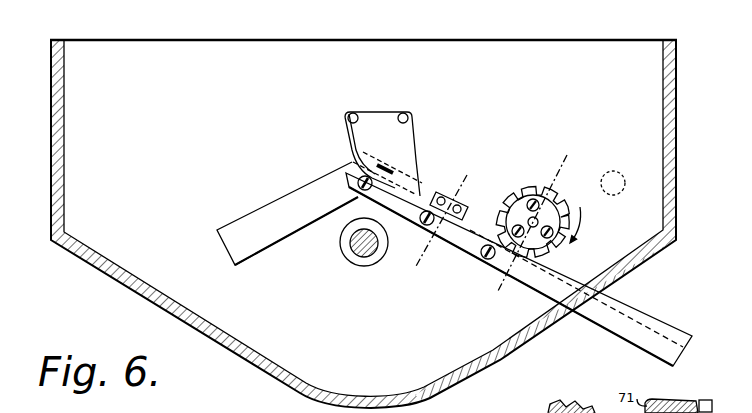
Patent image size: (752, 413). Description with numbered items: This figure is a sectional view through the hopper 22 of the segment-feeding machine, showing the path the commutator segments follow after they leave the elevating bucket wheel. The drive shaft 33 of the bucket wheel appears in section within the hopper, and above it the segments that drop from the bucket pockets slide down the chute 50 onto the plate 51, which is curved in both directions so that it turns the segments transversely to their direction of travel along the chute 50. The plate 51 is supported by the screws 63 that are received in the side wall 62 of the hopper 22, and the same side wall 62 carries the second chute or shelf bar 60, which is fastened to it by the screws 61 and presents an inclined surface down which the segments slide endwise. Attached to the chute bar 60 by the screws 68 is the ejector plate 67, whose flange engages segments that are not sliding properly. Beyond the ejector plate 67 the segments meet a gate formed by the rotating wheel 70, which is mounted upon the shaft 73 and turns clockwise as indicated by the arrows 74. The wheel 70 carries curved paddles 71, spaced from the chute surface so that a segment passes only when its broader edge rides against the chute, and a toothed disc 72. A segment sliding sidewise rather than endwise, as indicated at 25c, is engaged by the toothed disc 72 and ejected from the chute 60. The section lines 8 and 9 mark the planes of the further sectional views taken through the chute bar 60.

The section line 8- 8 is at (548, 162).
The section line 9- 9 is at (457, 176).
The hopper 22 is at (666, 248).
The sidewise sliding segment 25c is at (492, 266).
The drive shaft 33 is at (362, 246).
The chute 50 is at (393, 170).
The curved plate 51 is at (357, 140).
The shelf bar 60 is at (471, 248).
The screws 61 is at (362, 191).
The side wall 62 is at (287, 197).
The screws 63 is at (401, 113).
The ejector plate 67 is at (450, 196).
The screws 68 is at (470, 210).
The gate wheel 70 is at (524, 198).
The paddles 71 is at (563, 208).
The toothed disc 72 is at (552, 250).
The shaft 73 is at (533, 222).
The arrows 74 is at (578, 222).